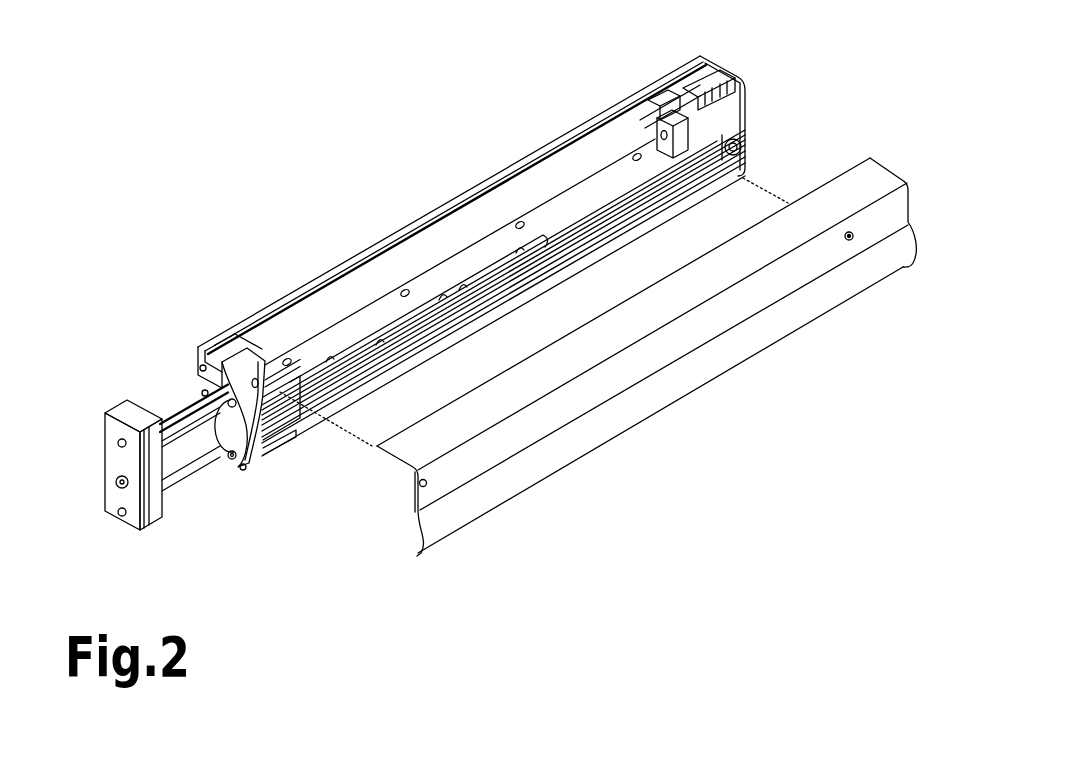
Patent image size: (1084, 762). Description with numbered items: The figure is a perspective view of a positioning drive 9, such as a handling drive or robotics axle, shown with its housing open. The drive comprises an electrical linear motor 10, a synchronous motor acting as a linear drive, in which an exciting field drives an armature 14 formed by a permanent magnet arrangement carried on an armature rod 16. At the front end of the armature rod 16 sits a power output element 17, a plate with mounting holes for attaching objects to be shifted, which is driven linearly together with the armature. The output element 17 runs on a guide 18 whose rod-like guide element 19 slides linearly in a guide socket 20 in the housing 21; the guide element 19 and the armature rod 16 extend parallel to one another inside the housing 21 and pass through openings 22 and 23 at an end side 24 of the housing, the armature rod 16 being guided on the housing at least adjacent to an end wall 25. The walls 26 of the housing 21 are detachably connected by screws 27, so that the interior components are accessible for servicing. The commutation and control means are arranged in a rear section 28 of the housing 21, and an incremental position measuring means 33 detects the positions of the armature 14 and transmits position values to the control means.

The positioning drive 9 is at (553, 130).
The electrical linear motor 10 is at (833, 62).
The armature 14 is at (213, 388).
The armature rod 16 is at (187, 412).
The power output element 17 is at (147, 531).
The guide 18 is at (265, 440).
The guide element 19 is at (187, 470).
The guide socket 20 is at (242, 477).
The housing 21 is at (441, 207).
The opening 22 is at (223, 340).
The opening 23 is at (233, 452).
The end side 24 is at (243, 373).
The end wall 25 is at (272, 358).
The walls 26 is at (729, 366).
The screws 27 is at (848, 240).
The rear section 28 is at (660, 66).
The incremental position measuring means 33 is at (277, 434).